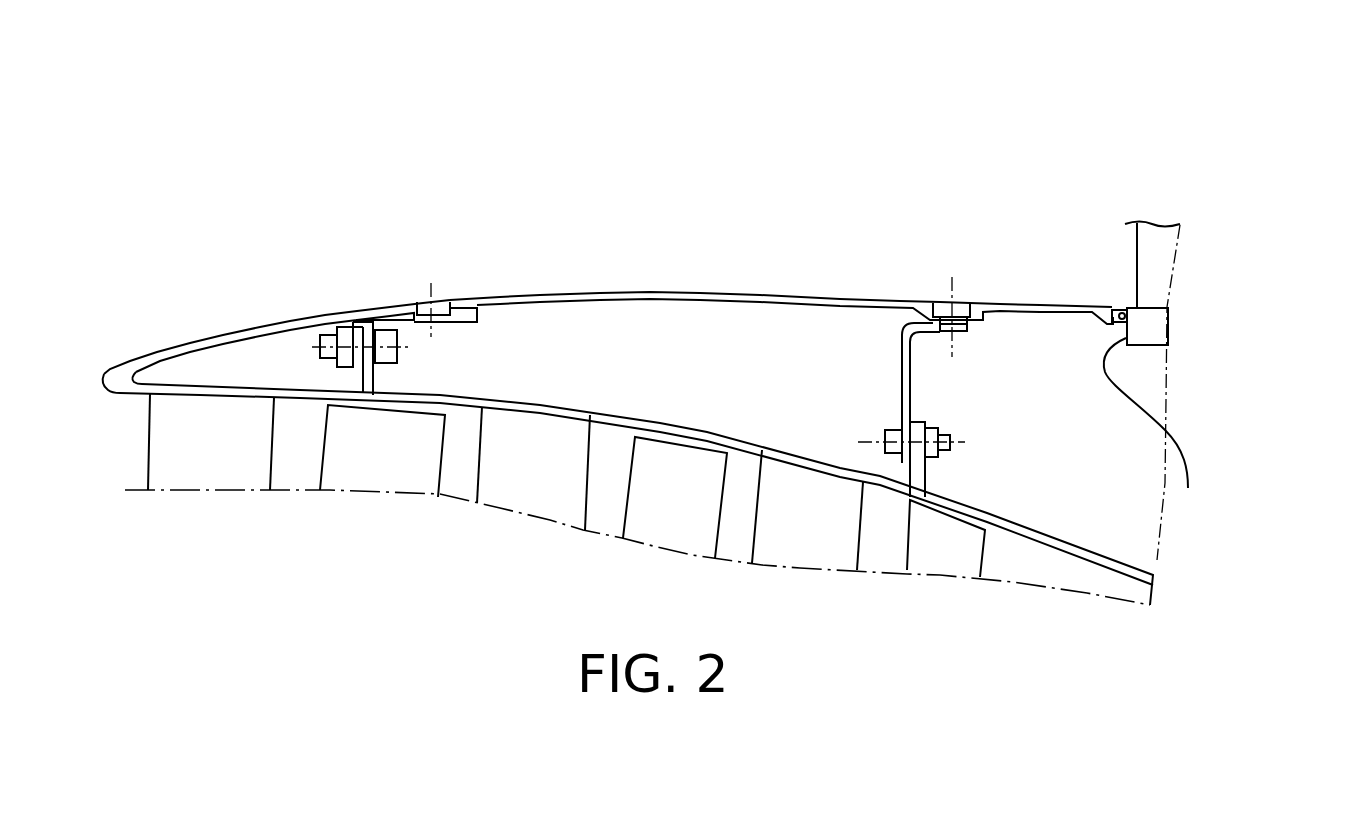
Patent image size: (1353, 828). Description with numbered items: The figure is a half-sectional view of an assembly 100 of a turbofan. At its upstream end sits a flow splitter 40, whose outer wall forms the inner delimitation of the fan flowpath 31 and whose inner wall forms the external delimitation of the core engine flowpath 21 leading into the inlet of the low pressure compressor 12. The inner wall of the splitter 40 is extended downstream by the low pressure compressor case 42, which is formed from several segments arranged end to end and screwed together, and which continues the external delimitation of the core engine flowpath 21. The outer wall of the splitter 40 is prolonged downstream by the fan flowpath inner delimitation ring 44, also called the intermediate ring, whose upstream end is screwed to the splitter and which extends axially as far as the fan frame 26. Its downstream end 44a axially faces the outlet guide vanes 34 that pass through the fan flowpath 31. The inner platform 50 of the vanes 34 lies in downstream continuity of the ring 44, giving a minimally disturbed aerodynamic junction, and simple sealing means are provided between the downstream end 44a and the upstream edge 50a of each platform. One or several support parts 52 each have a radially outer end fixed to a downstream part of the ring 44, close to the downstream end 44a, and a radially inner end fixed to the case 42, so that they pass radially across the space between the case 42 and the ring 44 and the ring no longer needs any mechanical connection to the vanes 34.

The assembly 100 is at (1070, 215).
The low pressure compressor 12 is at (352, 491).
The core engine flowpath 21 is at (452, 490).
The fan frame 26 is at (1195, 267).
The fan flowpath 31 is at (631, 274).
The outlet guide vanes 34 is at (1163, 222).
The flow splitter 40 is at (236, 366).
The low pressure compressor case 42 is at (561, 404).
The fan flowpath inner delimitation ring 44 is at (763, 297).
The downstream end 44a is at (1116, 309).
The inner platform 50 is at (1152, 327).
The upstream edge 50a is at (1164, 427).
The support parts 52 is at (901, 382).